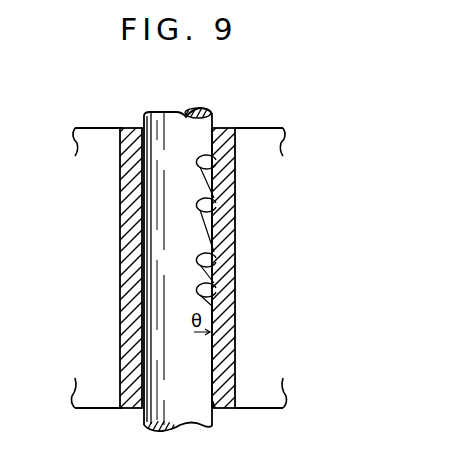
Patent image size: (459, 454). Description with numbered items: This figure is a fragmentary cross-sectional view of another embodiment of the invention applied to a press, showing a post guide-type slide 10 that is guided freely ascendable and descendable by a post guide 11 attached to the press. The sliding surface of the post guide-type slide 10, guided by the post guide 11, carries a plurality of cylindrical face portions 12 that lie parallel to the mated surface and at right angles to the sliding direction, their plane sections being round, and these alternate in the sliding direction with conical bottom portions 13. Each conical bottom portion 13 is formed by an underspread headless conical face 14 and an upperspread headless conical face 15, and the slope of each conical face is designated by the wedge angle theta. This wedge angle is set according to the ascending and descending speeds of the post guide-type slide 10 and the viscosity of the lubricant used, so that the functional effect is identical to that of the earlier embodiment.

The post guide-type slide 10 is at (95, 130).
The post guide 11 is at (192, 133).
The cylindrical face portion 12 is at (235, 167).
The conical bottom portion 13 is at (212, 209).
The underspread headless conical face 14 is at (212, 248).
The upperspread headless conical face 15 is at (212, 306).